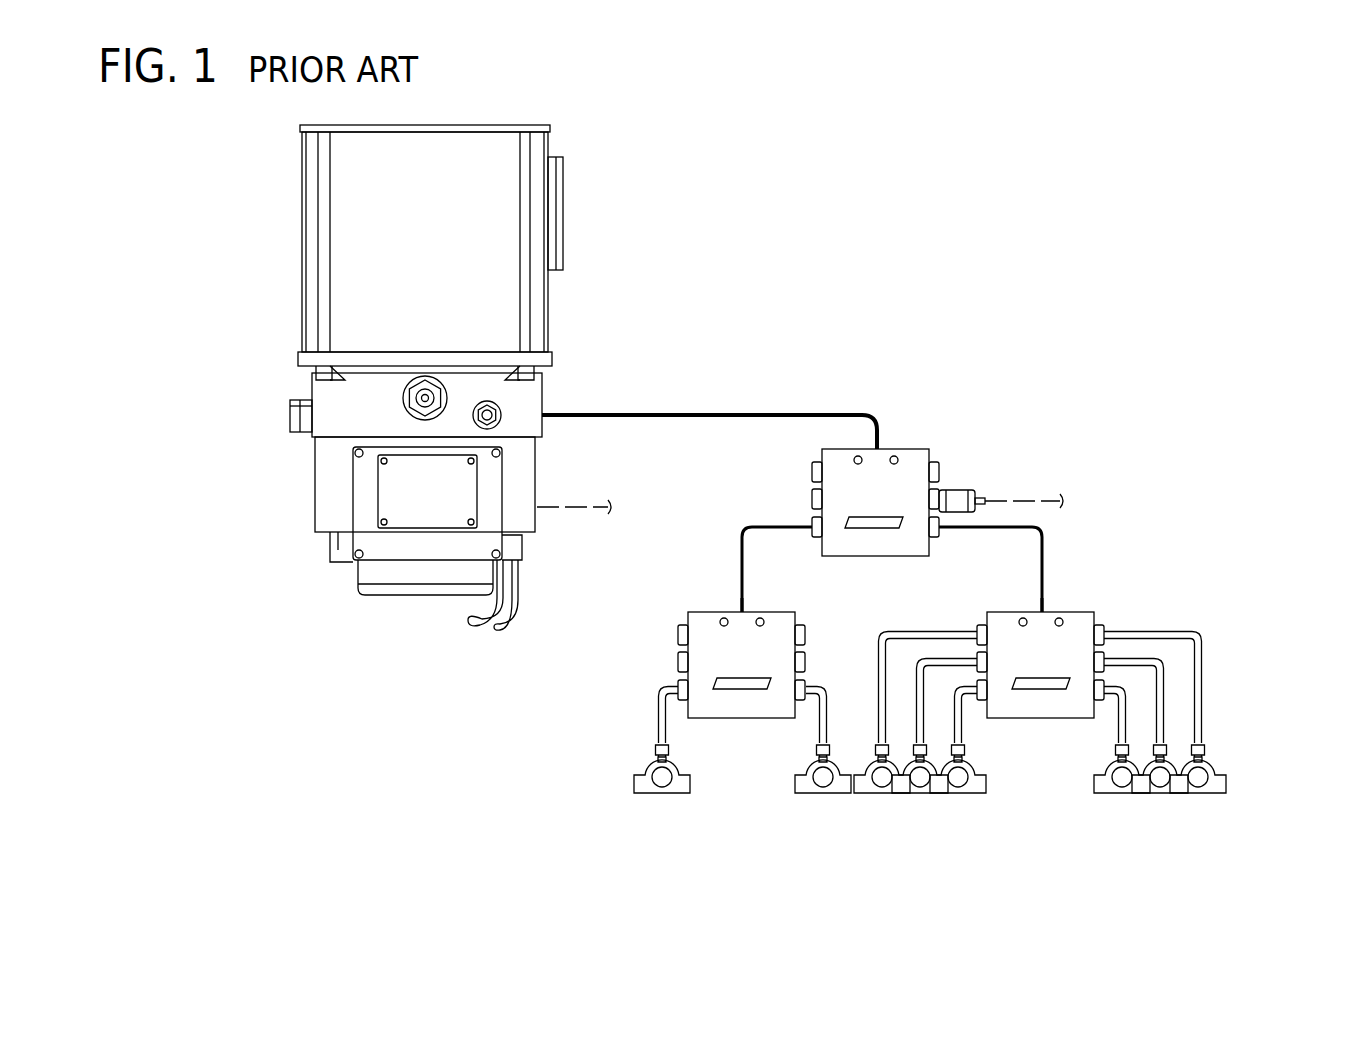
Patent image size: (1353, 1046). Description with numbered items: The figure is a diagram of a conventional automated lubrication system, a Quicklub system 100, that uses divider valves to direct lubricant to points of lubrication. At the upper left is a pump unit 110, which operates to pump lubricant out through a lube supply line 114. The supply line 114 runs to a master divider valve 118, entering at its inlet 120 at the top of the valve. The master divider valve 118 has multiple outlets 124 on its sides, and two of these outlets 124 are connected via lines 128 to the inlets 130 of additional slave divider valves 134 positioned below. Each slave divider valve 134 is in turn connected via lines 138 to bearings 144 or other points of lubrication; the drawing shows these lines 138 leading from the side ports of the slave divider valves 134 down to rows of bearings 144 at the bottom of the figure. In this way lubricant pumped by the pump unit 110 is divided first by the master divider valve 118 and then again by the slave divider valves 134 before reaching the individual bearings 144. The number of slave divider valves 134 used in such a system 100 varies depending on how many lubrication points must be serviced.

The Quicklub system 100 is at (985, 180).
The pump unit 110 is at (575, 152).
The lube supply line 114 is at (728, 413).
The master divider valve 118 is at (904, 440).
The inlet 120 is at (872, 440).
The outlets 124 is at (812, 522).
The lines 128 is at (738, 578).
The inlets 130 is at (746, 609).
The slave divider valves 134 is at (733, 720).
The lines 138 is at (668, 687).
The bearings 144 is at (652, 792).